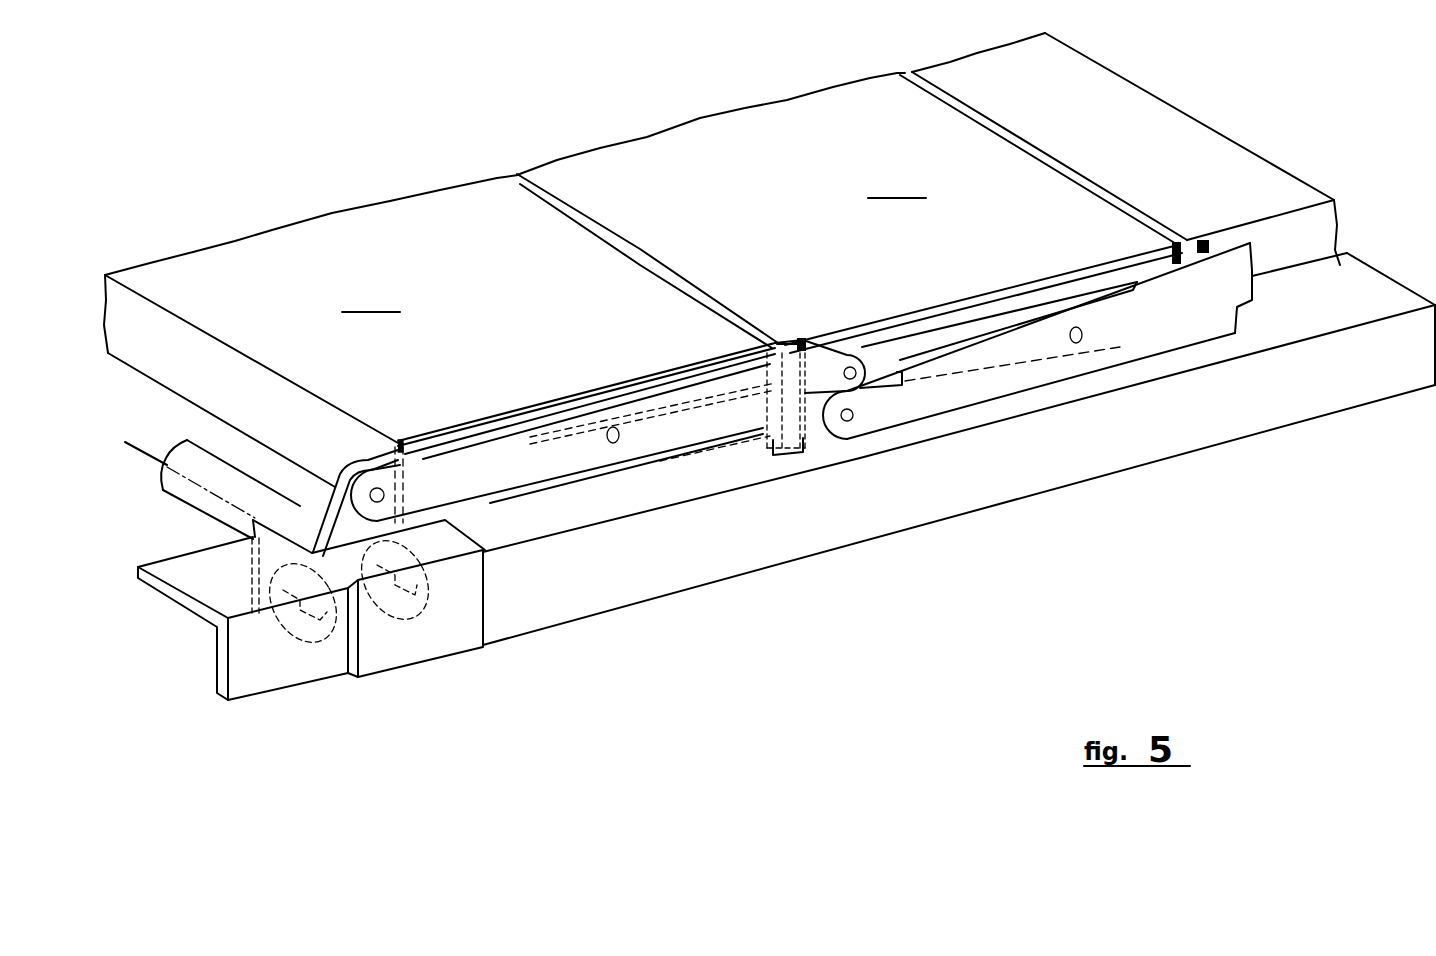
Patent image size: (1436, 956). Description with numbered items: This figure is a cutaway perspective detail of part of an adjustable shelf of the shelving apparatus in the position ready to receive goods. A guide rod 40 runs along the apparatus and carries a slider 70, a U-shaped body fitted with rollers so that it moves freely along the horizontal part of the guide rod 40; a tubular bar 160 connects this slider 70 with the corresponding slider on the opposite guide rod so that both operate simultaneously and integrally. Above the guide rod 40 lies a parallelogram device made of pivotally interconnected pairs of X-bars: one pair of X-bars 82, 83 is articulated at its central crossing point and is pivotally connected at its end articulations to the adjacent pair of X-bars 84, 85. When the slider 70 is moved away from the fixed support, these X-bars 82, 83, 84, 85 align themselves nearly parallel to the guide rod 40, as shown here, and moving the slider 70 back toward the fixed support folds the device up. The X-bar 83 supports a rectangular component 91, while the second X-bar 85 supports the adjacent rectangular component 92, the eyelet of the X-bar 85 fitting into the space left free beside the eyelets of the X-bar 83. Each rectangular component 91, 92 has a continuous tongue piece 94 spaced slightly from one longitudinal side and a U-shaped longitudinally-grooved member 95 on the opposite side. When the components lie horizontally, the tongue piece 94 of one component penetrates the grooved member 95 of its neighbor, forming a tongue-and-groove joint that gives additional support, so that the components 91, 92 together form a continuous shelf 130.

The guide rod 40 is at (903, 505).
The slider 70 is at (431, 648).
The X-bar 82 is at (533, 455).
The X-bar 83 is at (718, 438).
The X-bar 84 is at (973, 387).
The X-bar 85 is at (1200, 327).
The rectangular component 91 is at (311, 331).
The rectangular component 92 is at (587, 187).
The tongue piece 94 is at (152, 353).
The longitudinally-grooved member 95 is at (790, 452).
The continuous shelf 130 is at (722, 260).
The tubular bar 160 is at (170, 484).